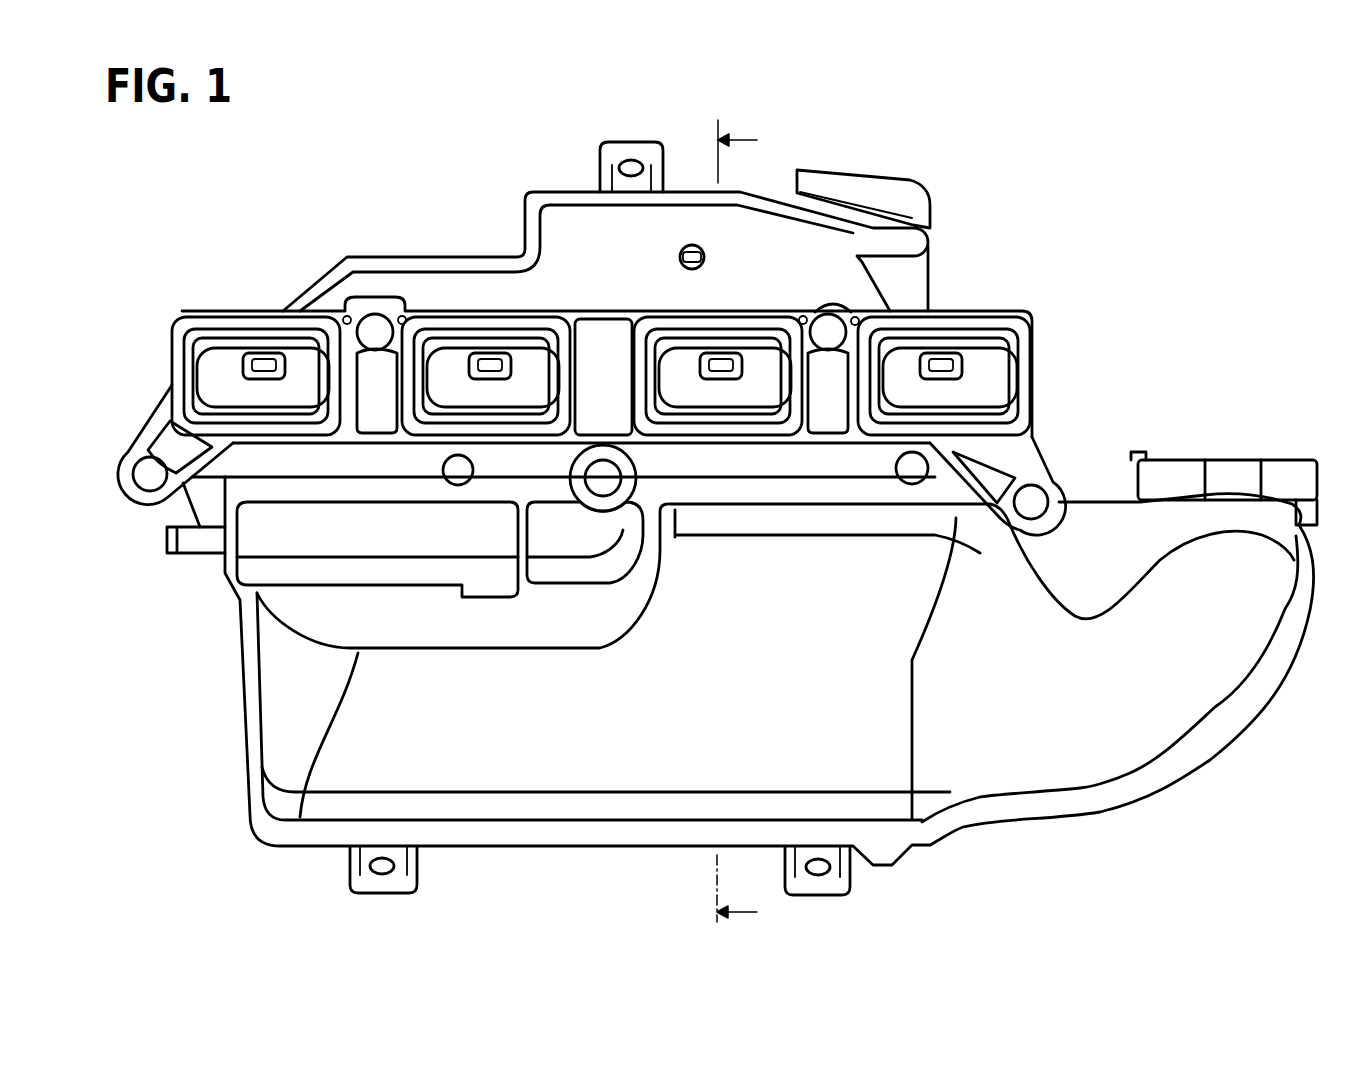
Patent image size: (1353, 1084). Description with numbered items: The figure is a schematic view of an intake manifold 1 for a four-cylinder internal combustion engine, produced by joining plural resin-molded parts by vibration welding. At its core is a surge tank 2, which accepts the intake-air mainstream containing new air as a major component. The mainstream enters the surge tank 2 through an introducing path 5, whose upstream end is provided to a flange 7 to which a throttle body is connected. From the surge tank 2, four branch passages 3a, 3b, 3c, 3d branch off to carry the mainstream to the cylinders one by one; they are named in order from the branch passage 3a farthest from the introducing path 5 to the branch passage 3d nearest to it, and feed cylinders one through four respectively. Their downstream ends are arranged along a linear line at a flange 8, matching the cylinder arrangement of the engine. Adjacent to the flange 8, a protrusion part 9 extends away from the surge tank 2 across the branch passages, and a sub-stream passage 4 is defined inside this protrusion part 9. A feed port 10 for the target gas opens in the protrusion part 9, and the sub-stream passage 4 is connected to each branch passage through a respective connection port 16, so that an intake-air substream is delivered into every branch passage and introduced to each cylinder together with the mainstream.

The intake manifold 1 is at (1180, 197).
The surge tank 2 is at (517, 770).
The branch passage 3a is at (225, 355).
The branch passage 3b is at (466, 345).
The branch passage 3c is at (770, 347).
The branch passage 3d is at (993, 348).
The sub-stream passage 4 is at (577, 227).
The introducing path 5 is at (1208, 672).
The flange 7 is at (1273, 473).
The flange 8 is at (1020, 323).
The protrusion part 9 is at (550, 243).
The feed port 10 is at (692, 245).
The connection port 16 is at (938, 368).